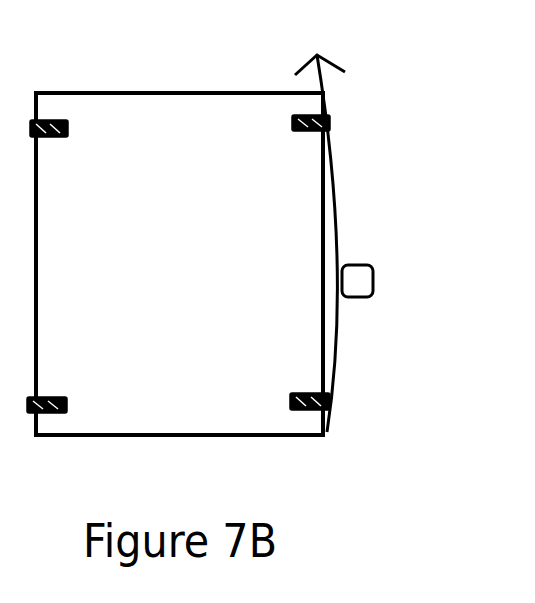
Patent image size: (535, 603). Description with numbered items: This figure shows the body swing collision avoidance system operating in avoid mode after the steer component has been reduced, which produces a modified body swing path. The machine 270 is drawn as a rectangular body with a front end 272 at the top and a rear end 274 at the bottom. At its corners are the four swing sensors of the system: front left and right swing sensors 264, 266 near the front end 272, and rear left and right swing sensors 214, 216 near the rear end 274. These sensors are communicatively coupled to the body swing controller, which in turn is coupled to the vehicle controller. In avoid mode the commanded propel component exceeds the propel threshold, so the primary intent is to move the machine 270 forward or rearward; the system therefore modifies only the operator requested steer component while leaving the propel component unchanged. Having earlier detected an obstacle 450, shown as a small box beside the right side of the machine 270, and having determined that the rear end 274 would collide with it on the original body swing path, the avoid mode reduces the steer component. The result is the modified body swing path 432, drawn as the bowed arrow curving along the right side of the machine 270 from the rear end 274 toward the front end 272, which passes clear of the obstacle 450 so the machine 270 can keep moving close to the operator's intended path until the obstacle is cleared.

The machine 270 is at (74, 62).
The front end 272 is at (203, 92).
The rear end 274 is at (155, 440).
The front left swing sensor 264 is at (52, 138).
The front right swing sensor 266 is at (305, 132).
The rear left swing sensor 214 is at (50, 400).
The rear right swing sensor 216 is at (305, 395).
The modified body swing path 432 is at (340, 207).
The obstacle 450 is at (373, 266).